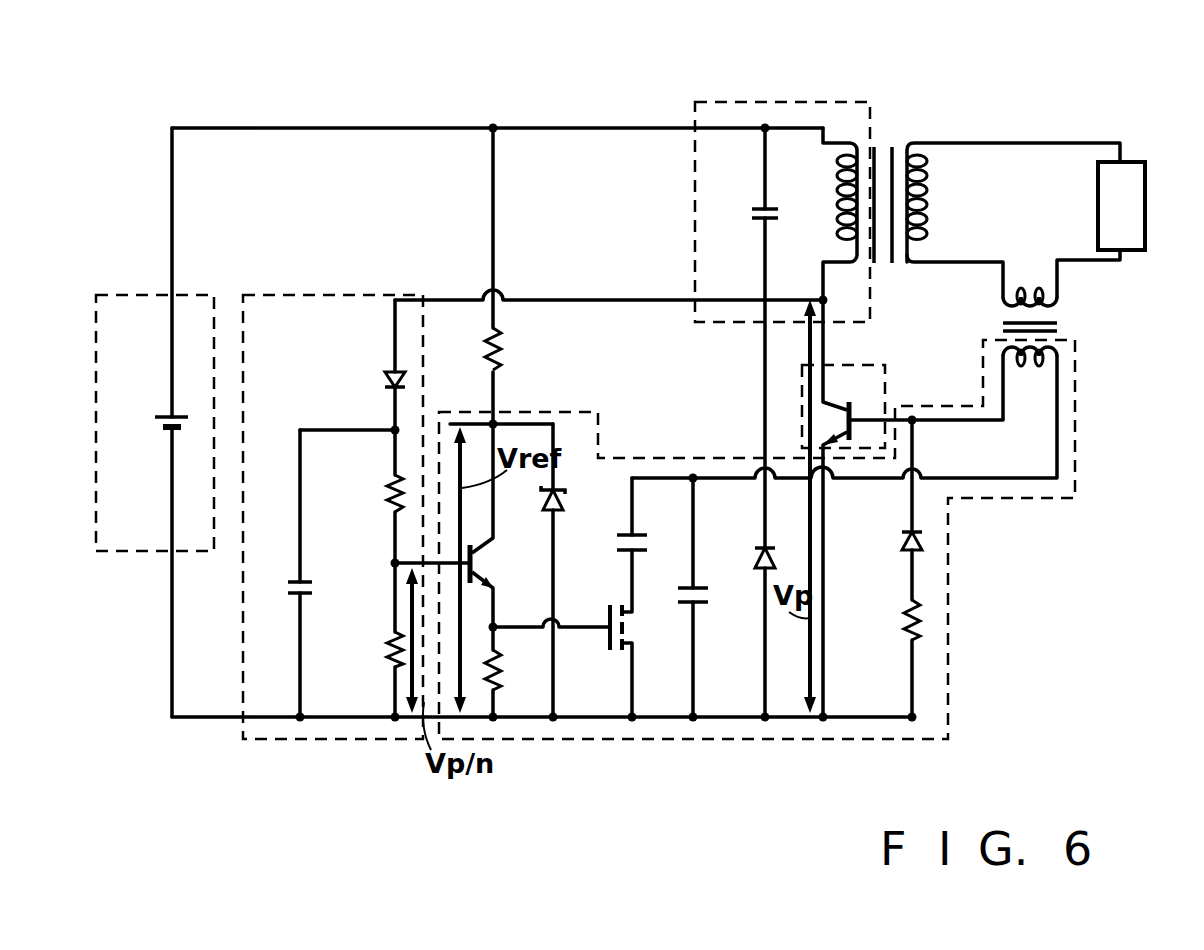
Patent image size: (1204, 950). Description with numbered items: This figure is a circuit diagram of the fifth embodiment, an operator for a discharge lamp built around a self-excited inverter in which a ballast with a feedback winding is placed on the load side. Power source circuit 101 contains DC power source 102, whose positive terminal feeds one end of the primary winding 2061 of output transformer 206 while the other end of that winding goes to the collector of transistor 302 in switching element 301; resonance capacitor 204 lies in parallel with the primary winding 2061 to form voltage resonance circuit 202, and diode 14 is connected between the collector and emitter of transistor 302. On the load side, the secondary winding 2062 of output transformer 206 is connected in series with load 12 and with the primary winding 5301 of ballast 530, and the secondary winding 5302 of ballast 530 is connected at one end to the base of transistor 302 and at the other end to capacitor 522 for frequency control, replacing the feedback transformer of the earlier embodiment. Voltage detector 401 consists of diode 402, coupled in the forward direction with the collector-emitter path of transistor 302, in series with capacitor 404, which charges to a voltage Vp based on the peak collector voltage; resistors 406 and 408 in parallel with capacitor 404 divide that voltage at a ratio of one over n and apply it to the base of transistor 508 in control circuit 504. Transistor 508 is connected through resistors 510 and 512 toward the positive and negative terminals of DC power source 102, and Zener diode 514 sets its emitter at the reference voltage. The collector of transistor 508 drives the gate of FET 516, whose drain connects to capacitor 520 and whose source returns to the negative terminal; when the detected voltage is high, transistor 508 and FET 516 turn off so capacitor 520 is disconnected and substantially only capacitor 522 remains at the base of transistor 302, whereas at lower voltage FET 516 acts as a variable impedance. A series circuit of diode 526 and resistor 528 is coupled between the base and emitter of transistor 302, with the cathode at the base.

The power source circuit 101 is at (148, 551).
The DC power source 102 is at (165, 413).
The voltage detector 401 is at (337, 740).
The diode 402 is at (385, 375).
The capacitor 404 is at (308, 588).
The resistor 406 is at (388, 500).
The resistor 408 is at (388, 640).
The control circuit 504 is at (612, 740).
The resistor 510 is at (500, 357).
The resistor 512 is at (500, 676).
The Zener diode 514 is at (566, 482).
The transistor 508 is at (478, 572).
The FET 516 is at (632, 618).
The capacitor 520 is at (648, 550).
The capacitor 522 is at (700, 596).
The diode 14 is at (778, 558).
The diode 526 is at (905, 540).
The resistor 528 is at (904, 624).
The voltage resonance circuit 202 is at (784, 100).
The resonance capacitor 204 is at (748, 206).
The output transformer 206 is at (884, 146).
The primary winding 2061 is at (842, 206).
The secondary winding 2062 is at (932, 190).
The load 12 is at (1146, 236).
The ballast with a feedback winding 530 is at (1061, 323).
The primary winding 5301 is at (1036, 294).
The secondary winding 5302 is at (1059, 380).
The switching element 301 is at (892, 384).
The transistor 302 is at (866, 392).